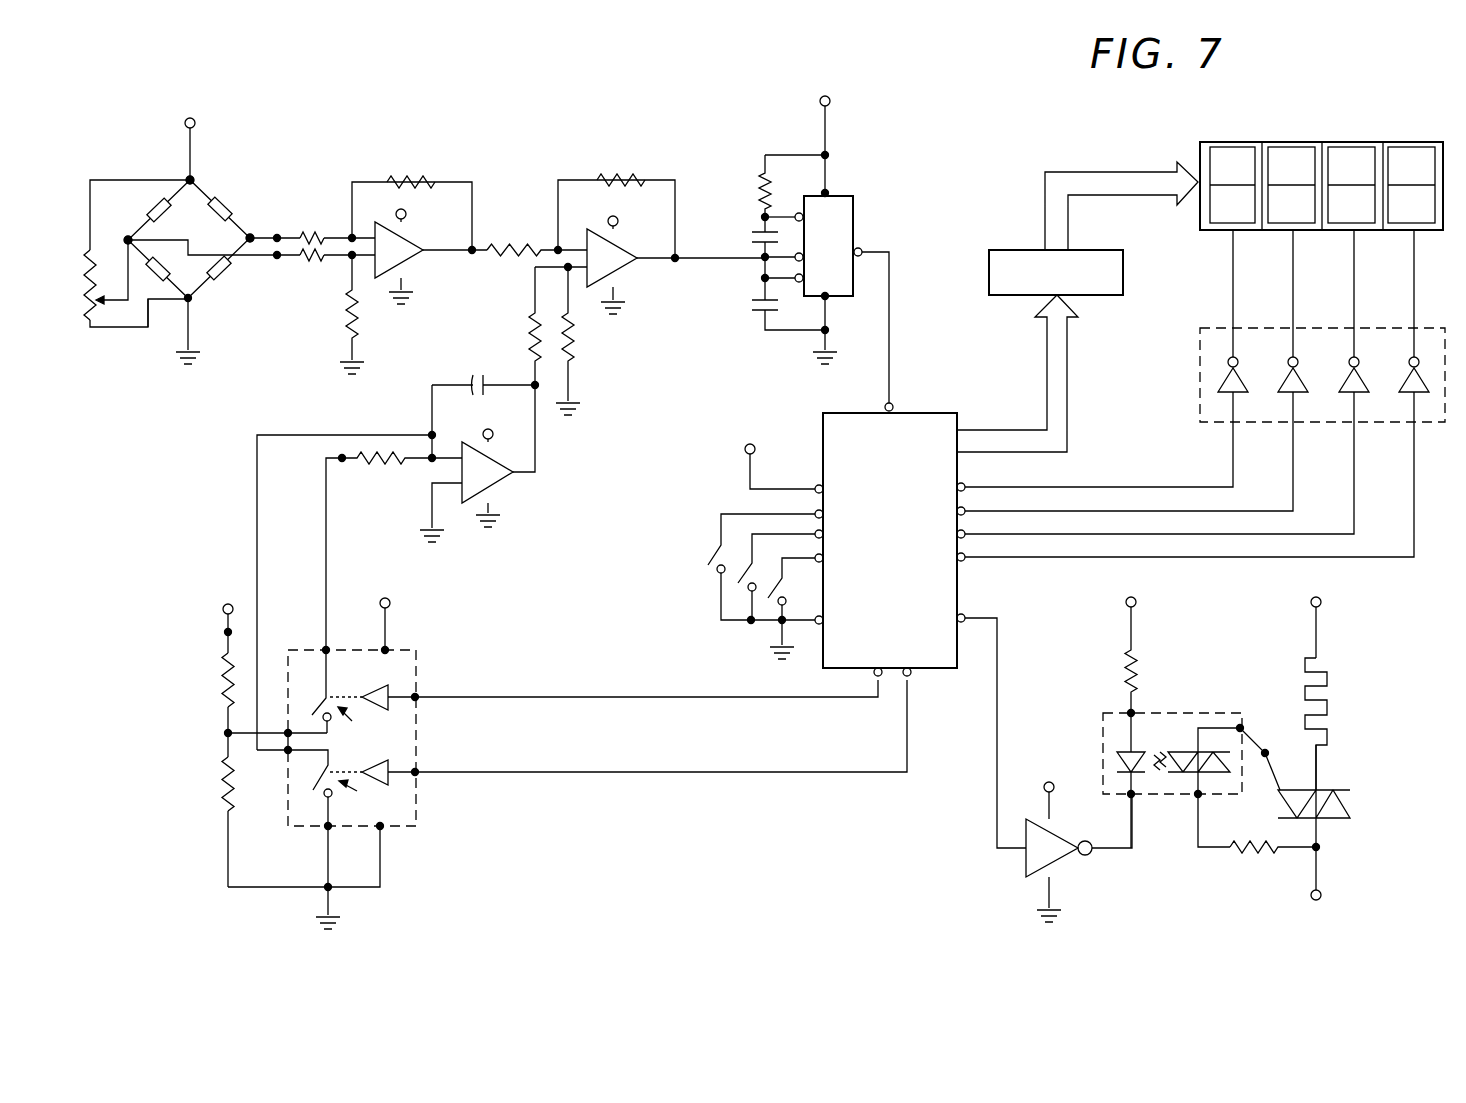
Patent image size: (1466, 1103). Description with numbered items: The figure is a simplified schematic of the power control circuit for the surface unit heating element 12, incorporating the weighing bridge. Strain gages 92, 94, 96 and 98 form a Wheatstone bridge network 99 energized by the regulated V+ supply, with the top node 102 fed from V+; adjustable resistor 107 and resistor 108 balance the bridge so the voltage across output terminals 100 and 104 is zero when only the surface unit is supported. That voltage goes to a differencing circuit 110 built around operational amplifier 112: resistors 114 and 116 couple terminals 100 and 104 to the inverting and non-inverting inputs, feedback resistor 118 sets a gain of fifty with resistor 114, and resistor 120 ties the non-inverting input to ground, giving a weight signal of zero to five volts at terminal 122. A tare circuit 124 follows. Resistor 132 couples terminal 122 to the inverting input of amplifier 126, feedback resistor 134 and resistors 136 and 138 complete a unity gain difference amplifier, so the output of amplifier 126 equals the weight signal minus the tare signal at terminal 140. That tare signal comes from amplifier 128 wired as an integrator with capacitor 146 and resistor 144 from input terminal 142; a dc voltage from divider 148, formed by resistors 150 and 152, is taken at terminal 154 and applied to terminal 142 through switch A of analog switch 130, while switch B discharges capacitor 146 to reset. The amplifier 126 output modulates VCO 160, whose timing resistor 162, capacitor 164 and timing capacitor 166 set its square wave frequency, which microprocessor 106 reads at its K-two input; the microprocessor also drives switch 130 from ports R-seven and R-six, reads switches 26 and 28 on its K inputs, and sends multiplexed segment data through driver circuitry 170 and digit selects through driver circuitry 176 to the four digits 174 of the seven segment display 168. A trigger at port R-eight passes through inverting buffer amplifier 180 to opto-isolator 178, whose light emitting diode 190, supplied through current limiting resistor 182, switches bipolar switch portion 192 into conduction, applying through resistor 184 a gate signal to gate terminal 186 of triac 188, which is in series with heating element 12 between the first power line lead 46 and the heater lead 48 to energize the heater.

The Wheatstone bridge network 99 is at (238, 159).
The bridge top node 102 is at (194, 180).
The bridge output terminal 104 is at (128, 238).
The strain gage 92 is at (163, 213).
The strain gage 94 is at (228, 274).
The strain gage 96 is at (230, 210).
The strain gage 98 is at (172, 282).
The bridge output terminal 100 is at (252, 236).
The adjustable resistor 107 is at (95, 305).
The resistor 108 is at (142, 282).
The resistor 114 is at (312, 230).
The resistor 116 is at (312, 263).
The differencing circuit 110 is at (434, 244).
The operational amplifier 112 is at (410, 270).
The feedback resistor 118 is at (412, 180).
The resistor 120 is at (360, 318).
The output terminal 122 is at (473, 256).
The resistor 132 is at (505, 245).
The feedback resistor 134 is at (625, 178).
The operational amplifier 126 is at (632, 275).
The resistor 136 is at (530, 330).
The resistor 138 is at (575, 340).
The tare signal terminal 140 is at (537, 388).
The tare circuit 124 is at (417, 550).
The capacitor 146 is at (468, 378).
The input terminal 142 is at (342, 462).
The resistor 144 is at (404, 462).
The operational amplifier 128 is at (492, 540).
The analog switch 130 is at (417, 650).
The voltage divider 148 is at (236, 732).
The resistor 150 is at (233, 660).
The resistor 152 is at (233, 781).
The divider terminal 154 is at (226, 734).
The VCO 160 is at (795, 247).
The timing resistor 162 is at (752, 190).
The capacitor 164 is at (756, 232).
The timing capacitor 166 is at (760, 310).
The microprocessor 106 is at (1035, 571).
The switch 26 is at (716, 548).
The switch 28 is at (740, 573).
The segment driver circuitry 170 is at (1003, 250).
The seven segment display 168 is at (1292, 163).
The digits 174 is at (1400, 145).
The driver circuitry 176 is at (1198, 332).
The inverting buffer amplifier 180 is at (1058, 863).
The opto-isolator circuit 178 is at (1156, 715).
The current limiting resistor 182 is at (1134, 652).
The light emitting diode 190 is at (1123, 752).
The bipolar switch portion 192 is at (1178, 750).
The current limiting resistor 184 is at (1253, 858).
The gate terminal 186 is at (1266, 750).
The power line L1 lead 46 is at (1318, 641).
The heating element 12 is at (1329, 681).
The heater lead 48 is at (1318, 766).
The triac switching device 188 is at (1345, 809).